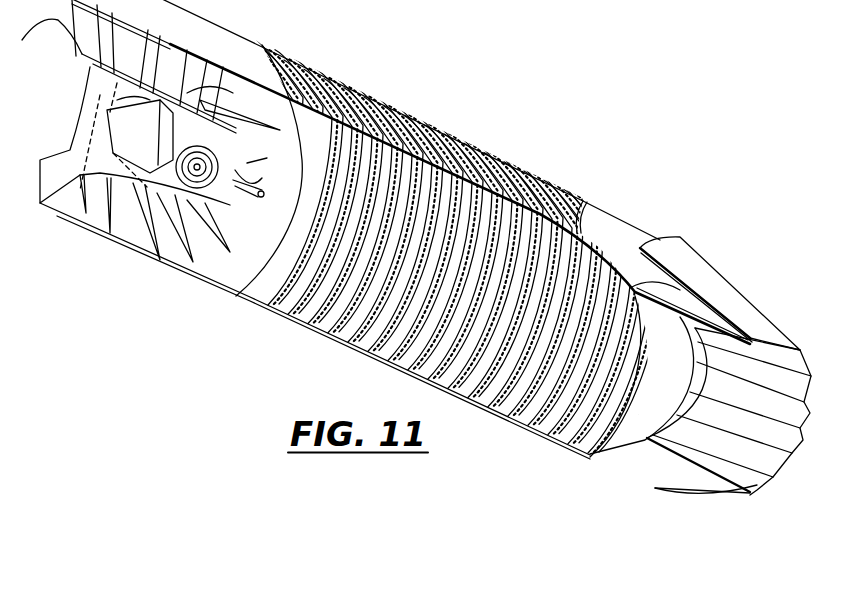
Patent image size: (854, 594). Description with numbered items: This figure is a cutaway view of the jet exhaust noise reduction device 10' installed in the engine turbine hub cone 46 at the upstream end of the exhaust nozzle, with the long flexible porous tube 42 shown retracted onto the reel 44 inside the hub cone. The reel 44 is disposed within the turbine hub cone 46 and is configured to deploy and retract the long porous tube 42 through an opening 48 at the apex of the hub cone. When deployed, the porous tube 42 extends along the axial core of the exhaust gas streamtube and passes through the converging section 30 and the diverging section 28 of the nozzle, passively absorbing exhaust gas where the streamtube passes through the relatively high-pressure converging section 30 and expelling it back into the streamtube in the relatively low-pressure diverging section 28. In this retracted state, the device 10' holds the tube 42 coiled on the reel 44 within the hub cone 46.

The jet exhaust noise reduction device 10' is at (411, 231).
The diverging section 28 is at (733, 453).
The converging section 30 is at (642, 423).
The long flexible porous tube 42 is at (233, 177).
The reel 44 is at (193, 167).
The engine turbine hub cone 46 is at (193, 117).
The opening 48 is at (263, 200).